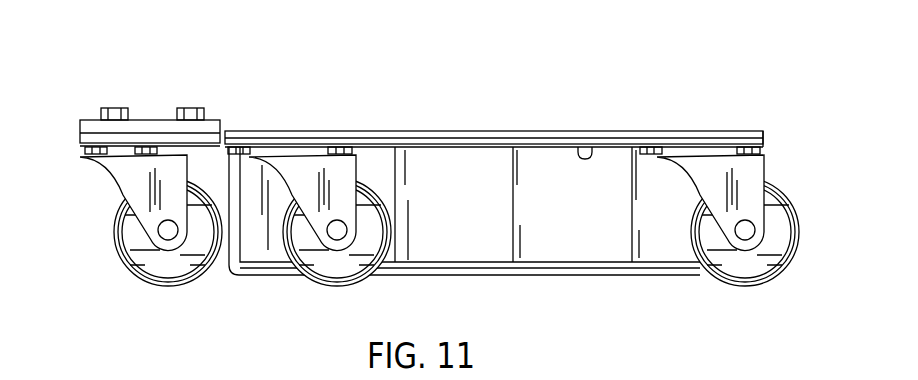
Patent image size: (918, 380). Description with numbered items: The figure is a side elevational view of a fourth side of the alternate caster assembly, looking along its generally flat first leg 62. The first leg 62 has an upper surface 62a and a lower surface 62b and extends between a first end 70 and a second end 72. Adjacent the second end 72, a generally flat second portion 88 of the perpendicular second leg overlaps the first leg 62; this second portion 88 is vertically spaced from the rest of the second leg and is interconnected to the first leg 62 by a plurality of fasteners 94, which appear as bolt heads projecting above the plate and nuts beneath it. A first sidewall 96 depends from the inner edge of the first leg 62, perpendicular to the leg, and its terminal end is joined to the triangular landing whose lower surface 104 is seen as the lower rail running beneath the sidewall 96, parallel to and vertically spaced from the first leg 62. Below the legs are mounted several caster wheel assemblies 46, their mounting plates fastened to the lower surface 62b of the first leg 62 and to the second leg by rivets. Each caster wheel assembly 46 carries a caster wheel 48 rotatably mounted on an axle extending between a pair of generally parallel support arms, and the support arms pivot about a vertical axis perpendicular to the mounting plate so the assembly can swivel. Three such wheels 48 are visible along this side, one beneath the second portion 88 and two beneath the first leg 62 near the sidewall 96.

The caster wheel assembly 46 is at (113, 237).
The caster wheel 48 is at (172, 270).
The first leg 62 is at (511, 132).
The upper surface 62a is at (323, 130).
The lower surface 62b is at (588, 157).
The first end 70 is at (765, 130).
The second end 72 is at (77, 138).
The second portion 88 is at (78, 119).
The fasteners 94 is at (178, 108).
The first sidewall 96 is at (456, 216).
The lower surface 104 is at (535, 275).